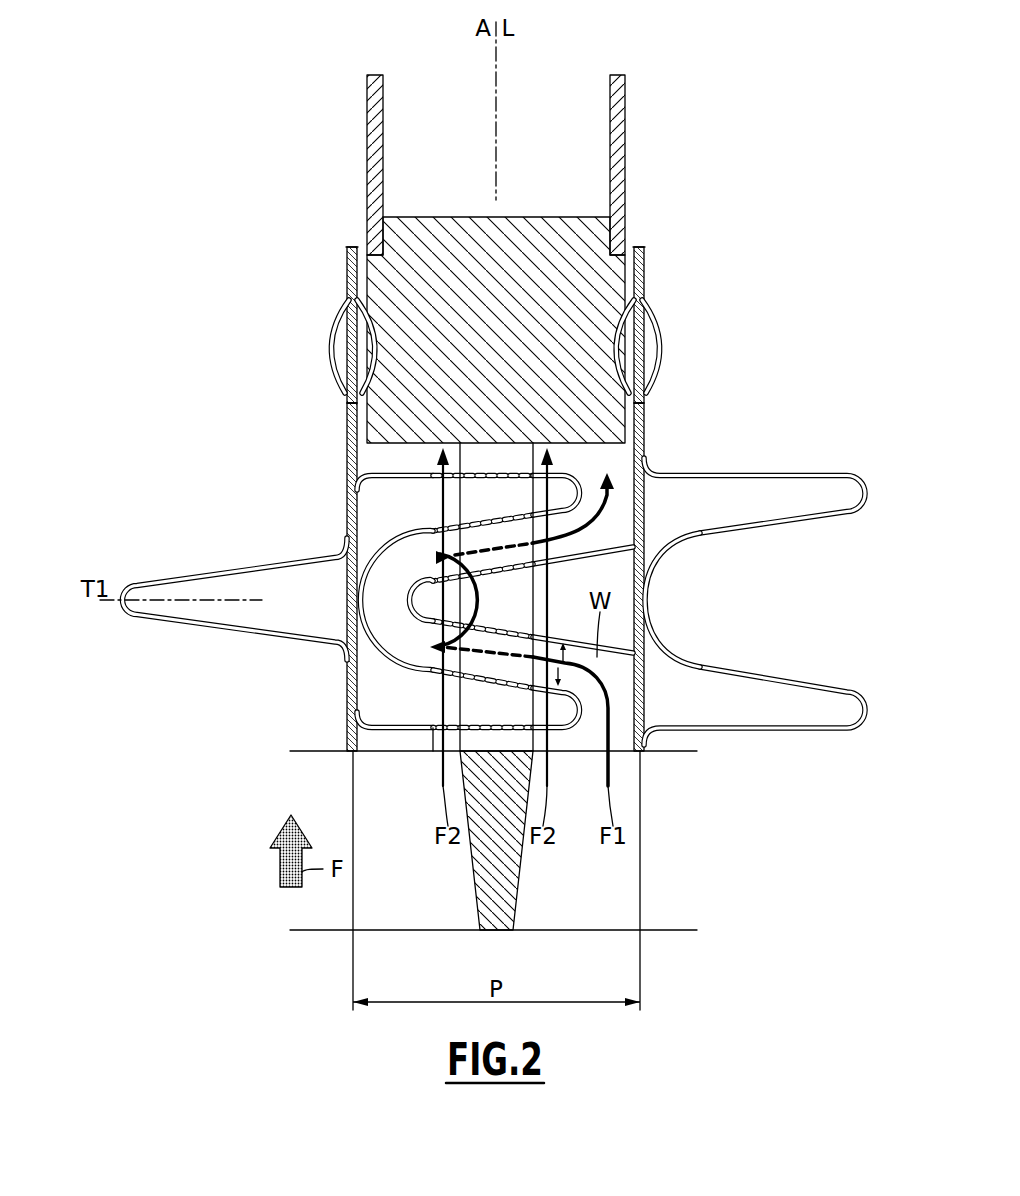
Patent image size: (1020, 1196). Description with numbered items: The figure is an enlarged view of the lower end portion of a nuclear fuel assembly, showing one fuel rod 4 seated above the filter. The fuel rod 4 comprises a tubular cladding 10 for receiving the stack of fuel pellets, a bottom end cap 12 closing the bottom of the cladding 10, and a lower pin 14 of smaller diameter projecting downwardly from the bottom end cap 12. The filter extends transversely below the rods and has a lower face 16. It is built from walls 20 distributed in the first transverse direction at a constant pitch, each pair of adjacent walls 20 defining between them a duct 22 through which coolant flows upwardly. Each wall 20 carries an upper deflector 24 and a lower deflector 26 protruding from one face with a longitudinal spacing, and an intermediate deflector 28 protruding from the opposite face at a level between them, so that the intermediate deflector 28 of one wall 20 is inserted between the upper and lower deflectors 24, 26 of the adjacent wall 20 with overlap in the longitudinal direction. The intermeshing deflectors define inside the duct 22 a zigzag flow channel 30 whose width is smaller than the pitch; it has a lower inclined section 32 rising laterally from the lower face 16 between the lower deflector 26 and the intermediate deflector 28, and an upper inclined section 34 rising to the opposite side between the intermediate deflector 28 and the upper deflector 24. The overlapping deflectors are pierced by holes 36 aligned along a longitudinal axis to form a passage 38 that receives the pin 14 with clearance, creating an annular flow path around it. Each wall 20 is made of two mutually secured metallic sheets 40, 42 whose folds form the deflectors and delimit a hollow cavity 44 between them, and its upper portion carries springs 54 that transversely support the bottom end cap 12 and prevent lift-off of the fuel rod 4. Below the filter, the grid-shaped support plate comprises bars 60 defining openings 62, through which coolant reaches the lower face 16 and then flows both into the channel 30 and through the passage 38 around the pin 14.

The fuel rod 4 is at (565, 82).
The tubular cladding 10 is at (375, 107).
The bottom end cap 12 is at (441, 227).
The lower pin 14 is at (441, 748).
The lower face 16 is at (347, 752).
The wall 20 is at (283, 447).
The duct 22 is at (363, 432).
The upper deflector 24 is at (383, 478).
The lower deflector 26 is at (392, 726).
The intermediate deflector 28 is at (125, 613).
The flow channel 30 is at (403, 651).
The lower inclined section 32 is at (605, 668).
The upper inclined section 34 is at (603, 543).
The holes 36 is at (415, 625).
The passage 38 is at (426, 747).
The metallic sheet 40 is at (347, 266).
The metallic sheet 42 is at (356, 247).
The hollow cavity 44 is at (384, 522).
The spring 54 is at (375, 347).
The bar 60 is at (512, 900).
The opening 62 is at (413, 910).